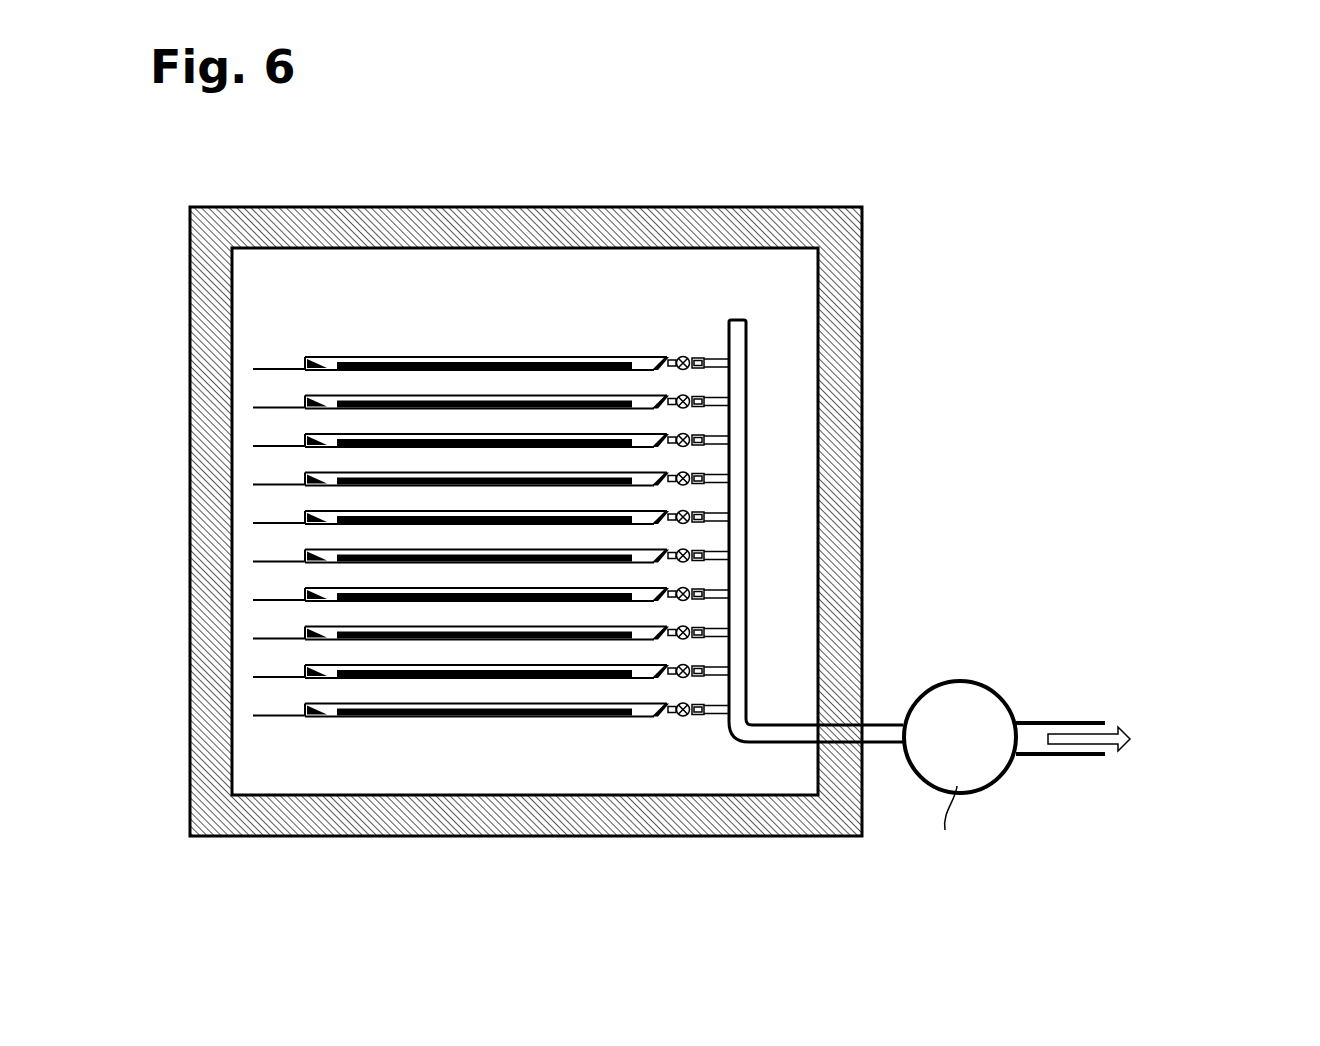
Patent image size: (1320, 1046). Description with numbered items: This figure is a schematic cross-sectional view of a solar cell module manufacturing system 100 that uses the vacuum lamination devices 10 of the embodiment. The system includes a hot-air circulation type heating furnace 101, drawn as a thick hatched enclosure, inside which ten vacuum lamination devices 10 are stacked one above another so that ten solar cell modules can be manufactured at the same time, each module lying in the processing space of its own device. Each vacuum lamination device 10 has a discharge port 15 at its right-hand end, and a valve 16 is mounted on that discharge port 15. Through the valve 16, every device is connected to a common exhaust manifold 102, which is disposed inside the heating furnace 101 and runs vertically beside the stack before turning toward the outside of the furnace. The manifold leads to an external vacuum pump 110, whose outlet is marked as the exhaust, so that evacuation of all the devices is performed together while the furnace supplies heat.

The vacuum lamination device 10 is at (528, 346).
The discharge port 15 is at (673, 356).
The valve 16 is at (698, 355).
The solar cell module manufacturing system 100 is at (930, 216).
The hot-air circulation type heating furnace 101 is at (812, 218).
The exhaust manifold 102 is at (733, 445).
The vacuum pump 110 is at (992, 688).